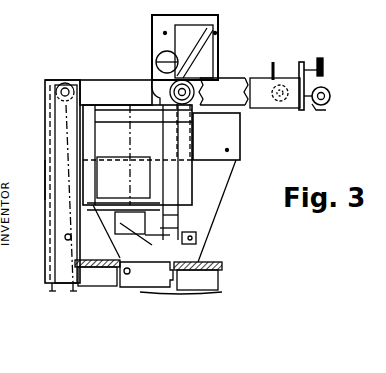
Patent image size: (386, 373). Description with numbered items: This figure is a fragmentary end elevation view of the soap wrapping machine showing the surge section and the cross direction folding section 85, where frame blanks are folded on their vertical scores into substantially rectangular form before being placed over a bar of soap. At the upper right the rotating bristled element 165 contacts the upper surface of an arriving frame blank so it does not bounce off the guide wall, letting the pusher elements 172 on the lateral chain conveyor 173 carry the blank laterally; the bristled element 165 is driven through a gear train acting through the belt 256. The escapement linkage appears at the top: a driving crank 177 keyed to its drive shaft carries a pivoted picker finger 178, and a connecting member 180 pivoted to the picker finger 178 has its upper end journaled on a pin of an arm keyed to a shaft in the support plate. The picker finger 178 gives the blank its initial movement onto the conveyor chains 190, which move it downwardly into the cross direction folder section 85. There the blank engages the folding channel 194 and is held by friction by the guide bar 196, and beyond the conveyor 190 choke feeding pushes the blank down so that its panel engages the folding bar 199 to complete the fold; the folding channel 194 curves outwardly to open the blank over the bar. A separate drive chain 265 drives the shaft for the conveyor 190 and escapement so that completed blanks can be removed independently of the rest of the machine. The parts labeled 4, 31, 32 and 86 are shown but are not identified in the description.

The base member 4 is at (146, 274).
The housing 31 is at (186, 160).
The mounting block 32 is at (148, 267).
The cross direction folding section 85 is at (37, 174).
The base plate 86 is at (220, 291).
The rotating bristled element 165 is at (274, 62).
The pusher elements 172 is at (327, 86).
The lateral chain conveyor 173 is at (322, 108).
The driving crank 177 is at (162, 50).
The picker finger 178 is at (162, 75).
The connecting member 180 is at (205, 40).
The conveyor chains 190 is at (244, 125).
The folding channel 194 is at (170, 220).
The guide bar 196 is at (162, 232).
The folding bar 199 is at (205, 234).
The belt 256 is at (321, 58).
The drive chain 265 is at (52, 117).